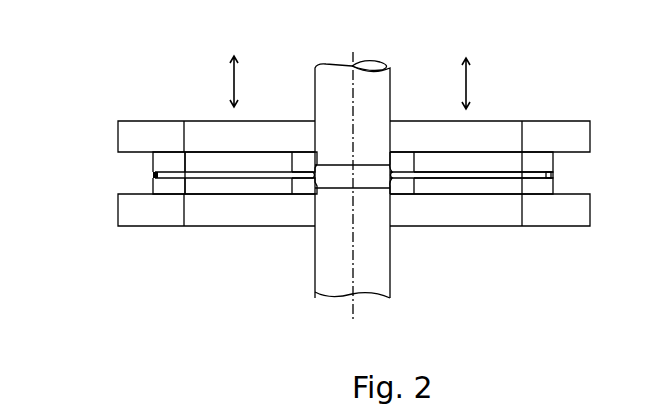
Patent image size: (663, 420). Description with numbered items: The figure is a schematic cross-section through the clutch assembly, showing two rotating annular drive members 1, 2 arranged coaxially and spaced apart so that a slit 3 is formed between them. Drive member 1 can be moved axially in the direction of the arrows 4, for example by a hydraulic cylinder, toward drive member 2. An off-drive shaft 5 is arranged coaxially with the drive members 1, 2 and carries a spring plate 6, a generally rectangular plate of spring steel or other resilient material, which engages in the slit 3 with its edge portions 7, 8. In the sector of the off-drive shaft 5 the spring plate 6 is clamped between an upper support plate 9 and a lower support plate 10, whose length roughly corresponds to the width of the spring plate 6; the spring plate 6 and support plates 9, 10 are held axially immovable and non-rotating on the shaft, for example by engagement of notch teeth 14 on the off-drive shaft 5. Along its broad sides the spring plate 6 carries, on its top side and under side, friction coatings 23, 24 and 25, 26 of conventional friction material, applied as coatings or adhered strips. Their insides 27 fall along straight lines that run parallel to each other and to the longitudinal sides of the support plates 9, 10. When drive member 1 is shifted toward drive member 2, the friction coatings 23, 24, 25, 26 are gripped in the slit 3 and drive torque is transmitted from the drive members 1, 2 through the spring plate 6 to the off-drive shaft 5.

The drive member 1 is at (140, 132).
The drive member 2 is at (137, 212).
The slit 3 is at (139, 173).
The arrows 4 is at (350, 65).
The off-drive shaft 5 is at (369, 85).
The spring plate 6 is at (248, 176).
The edge portion 7 is at (153, 174).
The edge portion 8 is at (548, 175).
The upper support plate 9 is at (304, 164).
The lower support plate 10 is at (303, 186).
The notch teeth 14 is at (338, 165).
The friction coating 23 is at (167, 160).
The friction coating 24 is at (166, 188).
The friction coating 25 is at (541, 160).
The friction coating 26 is at (543, 185).
The insides 27 is at (184, 188).